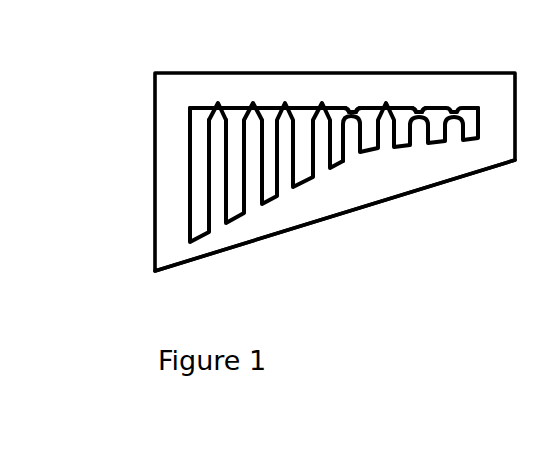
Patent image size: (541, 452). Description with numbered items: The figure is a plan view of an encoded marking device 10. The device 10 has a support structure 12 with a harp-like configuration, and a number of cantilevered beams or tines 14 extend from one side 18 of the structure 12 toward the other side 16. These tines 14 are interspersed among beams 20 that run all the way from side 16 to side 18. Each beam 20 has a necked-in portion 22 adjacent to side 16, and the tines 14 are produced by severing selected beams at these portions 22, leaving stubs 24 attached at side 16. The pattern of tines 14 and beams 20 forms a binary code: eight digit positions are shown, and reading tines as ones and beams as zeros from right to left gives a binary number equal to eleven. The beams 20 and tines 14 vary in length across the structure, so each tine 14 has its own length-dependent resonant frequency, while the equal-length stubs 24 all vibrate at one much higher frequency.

The encoded marking device 10 is at (477, 84).
The support structure 12 is at (482, 153).
The tines 14 is at (355, 157).
The side 16 is at (236, 111).
The side 18 is at (202, 224).
The beams 20 is at (254, 199).
The necked-in portion 22 is at (212, 109).
The stubs 24 is at (354, 107).